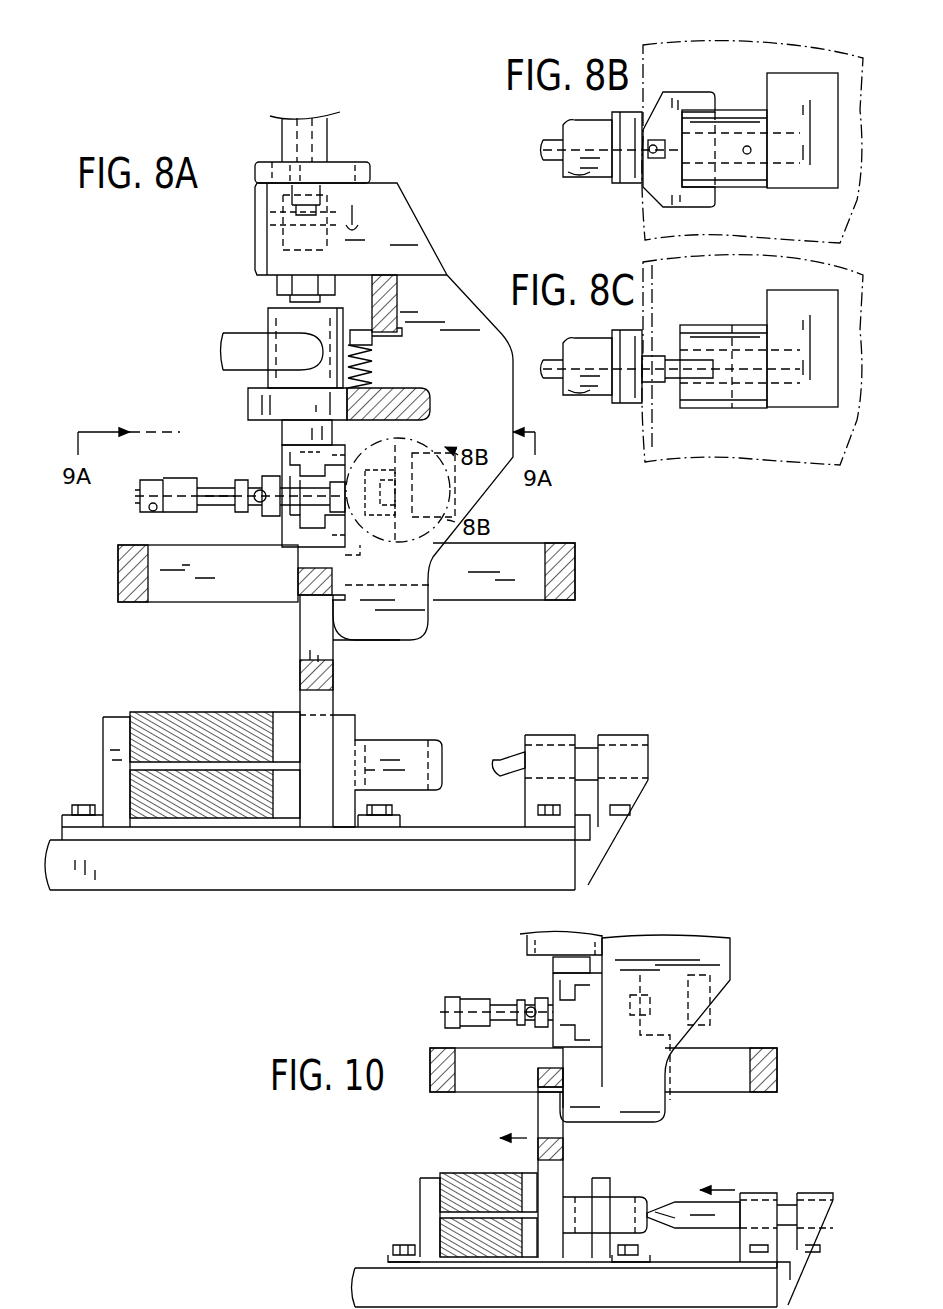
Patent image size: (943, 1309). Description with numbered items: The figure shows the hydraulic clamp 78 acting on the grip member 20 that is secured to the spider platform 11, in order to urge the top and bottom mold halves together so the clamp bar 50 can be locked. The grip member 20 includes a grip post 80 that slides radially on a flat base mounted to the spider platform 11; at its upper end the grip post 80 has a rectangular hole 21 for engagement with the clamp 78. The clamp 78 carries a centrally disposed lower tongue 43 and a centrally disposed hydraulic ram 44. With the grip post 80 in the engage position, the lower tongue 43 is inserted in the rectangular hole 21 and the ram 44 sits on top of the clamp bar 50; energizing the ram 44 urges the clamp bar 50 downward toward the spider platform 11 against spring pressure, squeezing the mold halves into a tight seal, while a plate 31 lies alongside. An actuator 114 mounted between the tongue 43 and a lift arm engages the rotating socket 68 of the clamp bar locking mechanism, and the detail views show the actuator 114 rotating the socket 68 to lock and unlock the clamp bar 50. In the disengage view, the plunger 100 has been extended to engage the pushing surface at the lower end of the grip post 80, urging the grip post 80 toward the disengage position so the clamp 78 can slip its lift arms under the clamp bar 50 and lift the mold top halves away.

In FIG. 8A, the clamp 78 is at (447, 240).
In FIG. 10, the clamp 78 is at (745, 955).
In FIG. 8A, the hydraulic ram 44 is at (283, 433).
In FIG. 10, the hydraulic ram 44 is at (553, 965).
In FIG. 8A, the clamp bar 50 is at (287, 522).
In FIG. 10, the clamp bar 50 is at (496, 1012).
In FIG. 8A, the plate 31 is at (590, 560).
In FIG. 10, the plate 31 is at (777, 1065).
In FIG. 8A, the rectangular hole 21 is at (300, 640).
In FIG. 10, the rectangular hole 21 is at (538, 1113).
In FIG. 8A, the lower tongue 43 is at (365, 642).
In FIG. 10, the lower tongue 43 is at (590, 1118).
In FIG. 8A, the grip post 80 is at (300, 690).
In FIG. 10, the grip post 80 is at (538, 1165).
In FIG. 8A, the grip member 20 is at (397, 718).
In FIG. 10, the grip member 20 is at (625, 1178).
In FIG. 8A, the plunger 100 is at (500, 760).
In FIG. 10, the plunger 100 is at (720, 1200).
In FIG. 8A, the spider platform 11 is at (305, 890).
In FIG. 10, the spider platform 11 is at (720, 1301).
In FIG. 8B, the rotating socket 68 is at (688, 95).
In FIG. 8C, the rotating socket 68 is at (676, 380).
In FIG. 8B, the actuator 114 is at (740, 118).
In FIG. 8C, the actuator 114 is at (735, 335).